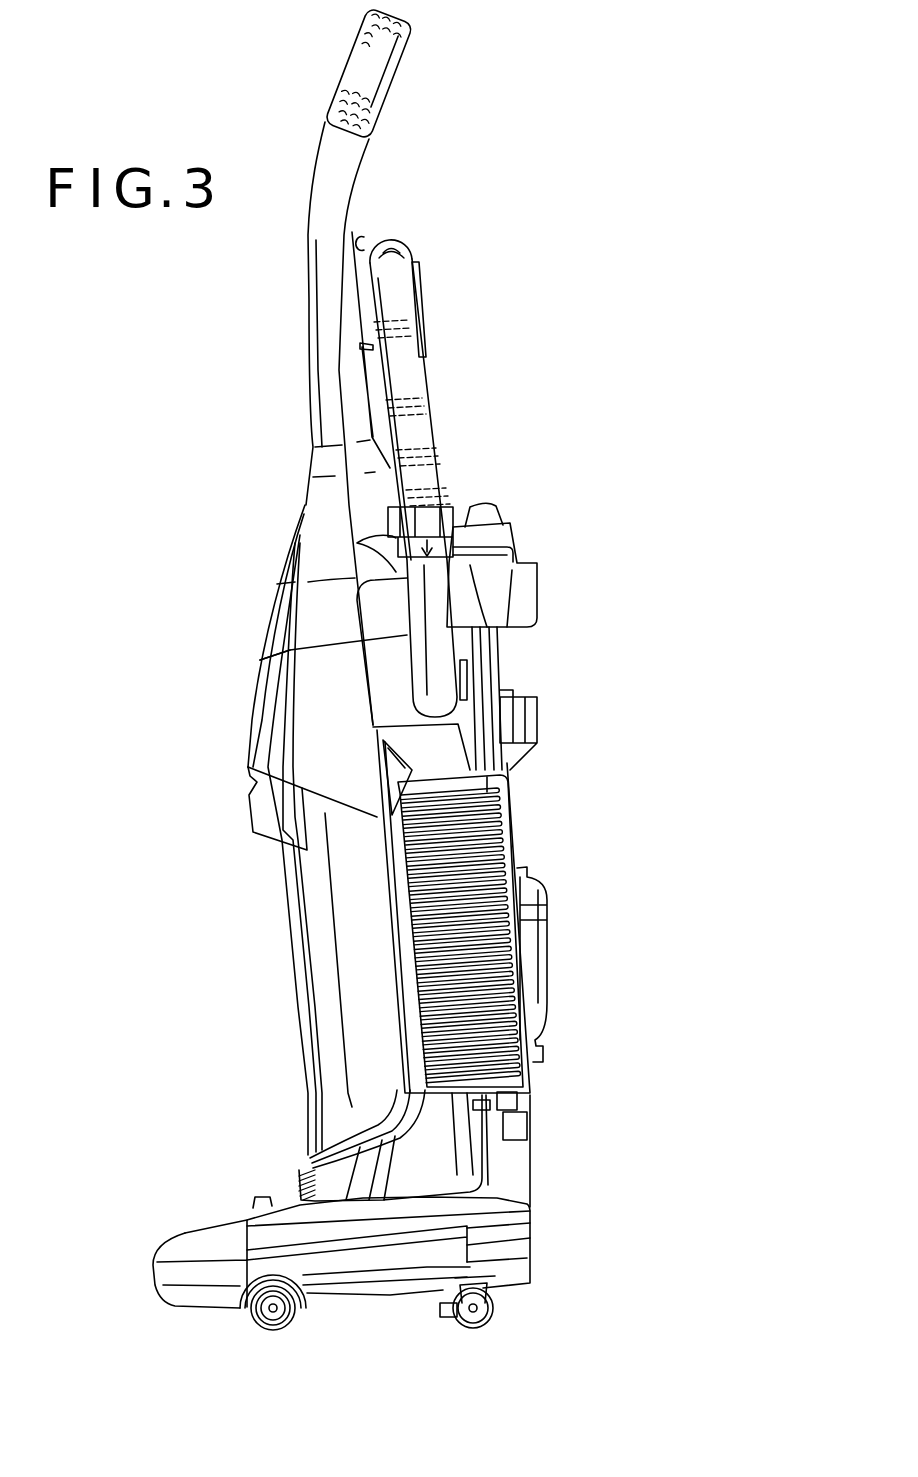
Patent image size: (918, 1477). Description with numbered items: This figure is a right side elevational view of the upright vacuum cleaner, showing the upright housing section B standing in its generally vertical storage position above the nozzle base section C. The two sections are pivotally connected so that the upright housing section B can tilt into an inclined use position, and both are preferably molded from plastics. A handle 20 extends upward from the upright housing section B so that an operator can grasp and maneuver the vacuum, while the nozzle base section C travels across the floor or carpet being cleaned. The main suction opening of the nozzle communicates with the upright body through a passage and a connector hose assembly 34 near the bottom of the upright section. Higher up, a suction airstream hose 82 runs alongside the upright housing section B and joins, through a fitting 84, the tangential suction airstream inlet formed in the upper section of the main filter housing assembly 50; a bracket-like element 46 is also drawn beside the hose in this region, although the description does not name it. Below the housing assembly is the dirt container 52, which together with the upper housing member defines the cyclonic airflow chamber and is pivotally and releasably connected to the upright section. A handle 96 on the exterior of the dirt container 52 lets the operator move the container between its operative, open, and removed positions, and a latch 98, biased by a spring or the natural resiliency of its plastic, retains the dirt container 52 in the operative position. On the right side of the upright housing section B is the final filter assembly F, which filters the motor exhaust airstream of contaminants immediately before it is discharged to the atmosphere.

The handle 20 is at (377, 122).
The suction airstream hose 82 is at (395, 238).
The fitting 84 is at (418, 592).
The bracket 46 is at (495, 653).
The main filter housing assembly 50 is at (246, 668).
The latch 98 is at (237, 767).
The handle 96 is at (262, 855).
The dirt container 52 is at (327, 1007).
The connector hose assembly 34 is at (531, 1187).
The upright housing section B is at (295, 503).
The nozzle base section C is at (177, 1226).
The final filter assembly F is at (522, 829).